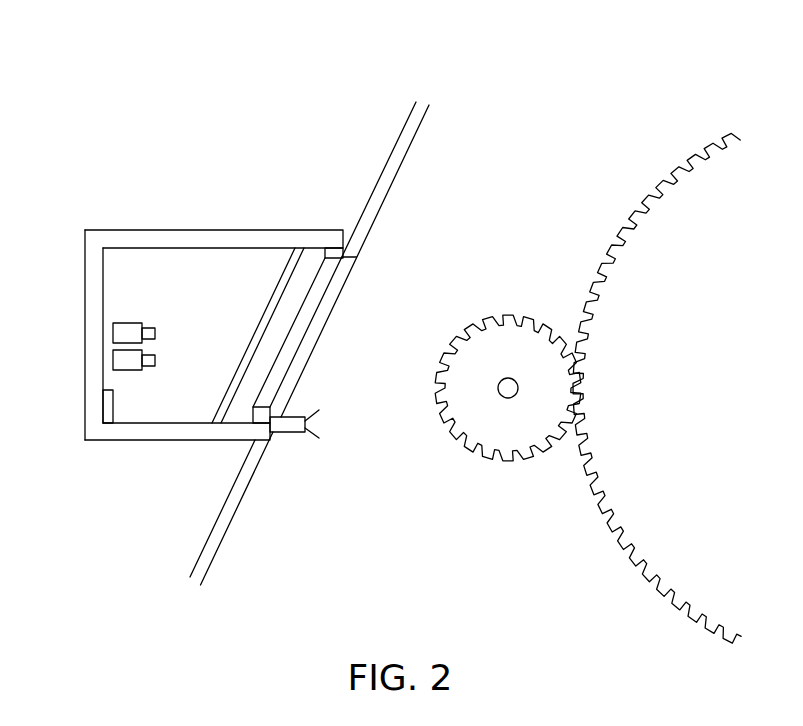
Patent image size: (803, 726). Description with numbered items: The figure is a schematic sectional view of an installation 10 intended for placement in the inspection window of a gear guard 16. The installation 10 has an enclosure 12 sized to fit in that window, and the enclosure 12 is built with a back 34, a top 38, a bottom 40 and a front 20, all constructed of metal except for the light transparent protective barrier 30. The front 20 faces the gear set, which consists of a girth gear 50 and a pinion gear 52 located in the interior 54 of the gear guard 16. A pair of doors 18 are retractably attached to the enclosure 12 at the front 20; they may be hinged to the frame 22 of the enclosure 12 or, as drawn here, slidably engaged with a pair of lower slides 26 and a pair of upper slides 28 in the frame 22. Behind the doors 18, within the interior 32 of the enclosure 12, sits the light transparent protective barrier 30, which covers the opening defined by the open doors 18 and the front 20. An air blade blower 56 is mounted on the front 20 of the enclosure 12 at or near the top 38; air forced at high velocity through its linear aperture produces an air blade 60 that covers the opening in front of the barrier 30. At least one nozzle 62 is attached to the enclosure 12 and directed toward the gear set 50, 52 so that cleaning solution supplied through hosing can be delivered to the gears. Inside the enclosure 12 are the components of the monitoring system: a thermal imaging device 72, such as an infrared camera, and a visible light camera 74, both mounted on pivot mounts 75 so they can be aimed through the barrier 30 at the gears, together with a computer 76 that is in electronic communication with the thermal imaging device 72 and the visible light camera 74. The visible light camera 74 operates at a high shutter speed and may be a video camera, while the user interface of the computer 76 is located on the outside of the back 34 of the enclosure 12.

The installation 10 is at (217, 140).
The enclosure 12 is at (101, 197).
The gear guard 16 is at (406, 130).
The doors 18 is at (325, 277).
The front 20 is at (315, 320).
The frame 22 is at (162, 240).
The lower slides 26 is at (266, 419).
The upper slides 28 is at (338, 247).
The light transparent protective barrier 30 is at (290, 272).
The interior 32 is at (230, 416).
The back 34 is at (96, 318).
The top 38 is at (235, 242).
The bottom 40 is at (115, 437).
The girth gear 50 is at (661, 208).
The pinion gear 52 is at (515, 338).
The interior of the gear guard 54 is at (402, 463).
The air blade blower 56 is at (358, 257).
The air blade 60 is at (311, 373).
The nozzle 62 is at (322, 425).
The thermal imaging device 72 is at (130, 331).
The visible light camera 74 is at (130, 370).
The pivot mounts 75 is at (104, 357).
The computer 76 is at (116, 406).